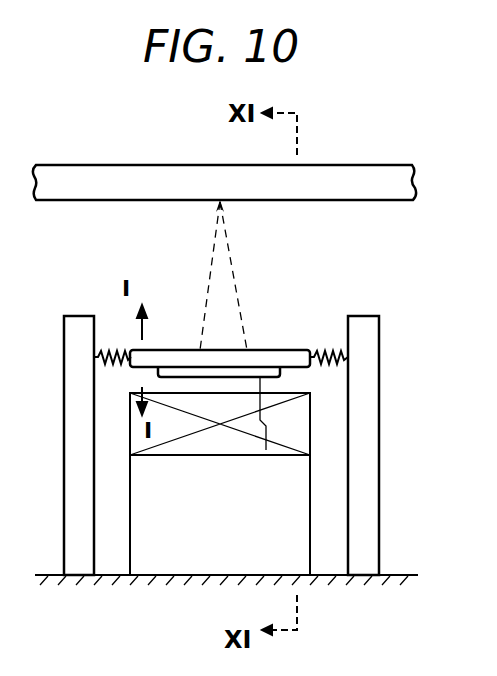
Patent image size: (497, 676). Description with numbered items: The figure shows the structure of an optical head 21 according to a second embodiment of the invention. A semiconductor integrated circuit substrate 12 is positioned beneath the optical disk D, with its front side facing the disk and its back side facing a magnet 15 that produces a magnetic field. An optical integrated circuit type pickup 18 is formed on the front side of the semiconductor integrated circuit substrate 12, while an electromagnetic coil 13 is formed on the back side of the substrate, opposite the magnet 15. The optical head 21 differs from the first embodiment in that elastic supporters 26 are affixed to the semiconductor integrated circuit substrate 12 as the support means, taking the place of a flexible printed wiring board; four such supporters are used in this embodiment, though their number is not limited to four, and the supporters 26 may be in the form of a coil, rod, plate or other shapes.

The optical disk D is at (332, 172).
The semiconductor integrated circuit substrate 12 is at (272, 356).
The electromagnetic coil 13 is at (266, 450).
The magnet 15 is at (217, 455).
The optical integrated circuit type pickup 18 is at (220, 350).
The optical head 21 is at (384, 312).
The elastic supporters 26 is at (108, 350).